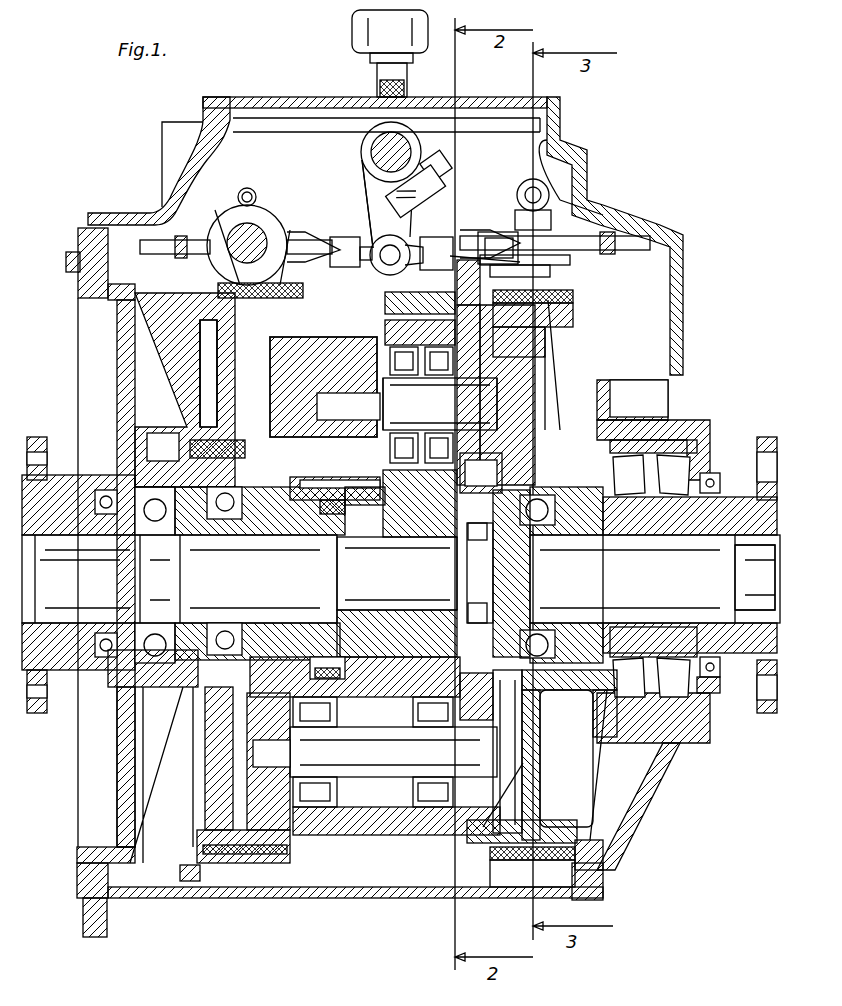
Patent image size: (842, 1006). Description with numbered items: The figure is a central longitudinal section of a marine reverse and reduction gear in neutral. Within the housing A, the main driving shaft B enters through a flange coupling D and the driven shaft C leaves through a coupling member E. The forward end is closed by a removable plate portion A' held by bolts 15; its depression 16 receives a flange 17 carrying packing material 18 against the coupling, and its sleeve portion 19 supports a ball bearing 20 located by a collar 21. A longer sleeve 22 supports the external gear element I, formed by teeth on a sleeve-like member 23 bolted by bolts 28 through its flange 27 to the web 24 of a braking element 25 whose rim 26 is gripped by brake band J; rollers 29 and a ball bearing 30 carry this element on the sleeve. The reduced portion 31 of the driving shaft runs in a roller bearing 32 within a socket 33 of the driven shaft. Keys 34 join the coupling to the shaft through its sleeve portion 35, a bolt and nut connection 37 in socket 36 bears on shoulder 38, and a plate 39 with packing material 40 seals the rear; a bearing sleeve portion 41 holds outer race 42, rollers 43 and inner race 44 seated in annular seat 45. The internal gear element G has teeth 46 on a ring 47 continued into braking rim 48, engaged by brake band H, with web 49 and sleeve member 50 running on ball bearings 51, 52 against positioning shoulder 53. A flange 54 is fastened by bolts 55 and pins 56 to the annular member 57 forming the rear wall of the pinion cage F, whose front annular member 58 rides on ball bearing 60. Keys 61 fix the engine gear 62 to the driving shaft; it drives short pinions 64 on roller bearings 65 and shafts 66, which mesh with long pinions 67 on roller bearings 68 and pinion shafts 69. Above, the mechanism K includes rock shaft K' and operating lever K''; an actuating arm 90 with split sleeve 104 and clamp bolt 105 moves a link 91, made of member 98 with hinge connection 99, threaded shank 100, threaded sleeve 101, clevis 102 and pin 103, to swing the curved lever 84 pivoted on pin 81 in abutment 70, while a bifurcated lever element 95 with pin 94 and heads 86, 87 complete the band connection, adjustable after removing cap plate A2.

The bolts 15 is at (66, 262).
The depression 16 is at (120, 720).
The flange 17 is at (110, 690).
The packing material 18 is at (95, 655).
The sleeve portion 19 is at (160, 490).
The ball bearing 20 is at (135, 537).
The collar 21 is at (85, 575).
The sleeve 22 is at (300, 535).
The sleeve-like member 23 is at (360, 478).
The web 24 is at (217, 370).
The braking element 25 is at (200, 330).
The rim 26 is at (218, 291).
The flange 27 is at (228, 440).
The bolts 28 is at (163, 447).
The rollers 29 is at (328, 640).
The ball bearing 30 is at (228, 520).
The reduced portion 31 is at (480, 580).
The roller bearing 32 is at (530, 605).
The socket 33 is at (470, 540).
The keys 34 is at (642, 535).
The sleeve portion 35 is at (720, 488).
The socket 36 is at (720, 677).
The bolt and nut connection 37 is at (755, 577).
The shoulder 38 is at (712, 623).
The plate 39 is at (680, 743).
The packing material 40 is at (712, 693).
The bearing sleeve portion 41 is at (632, 400).
The outer race 42 is at (672, 440).
The rollers 43 is at (700, 455).
The inner race 44 is at (700, 535).
The annular seat 45 is at (640, 545).
The teeth 46 is at (388, 300).
The ring 47 is at (430, 320).
The braking rim 48 is at (573, 315).
The web 49 is at (560, 340).
The sleeve member 50 is at (560, 535).
The ball bearing 51 is at (555, 645).
The ball bearing 52 is at (590, 640).
The positioning shoulder 53 is at (525, 580).
The flange 54 is at (500, 460).
The bolts 55 is at (493, 700).
The pins 56 is at (535, 450).
The annular member 57 is at (545, 350).
The annular member 58 is at (272, 863).
The ball bearing 60 is at (280, 470).
The keys 61 is at (397, 573).
The gear 62 is at (401, 561).
The short pinions 64 is at (395, 378).
The roller bearings 65 is at (432, 378).
The shafts 66 is at (481, 404).
The long pinions 67 is at (368, 830).
The roller bearings 68 is at (418, 797).
The pinion shafts 69 is at (393, 752).
The abutment 70 is at (262, 215).
The pin 81 is at (235, 255).
The curved lever 84 is at (155, 255).
The head 86 is at (242, 195).
The head 87 is at (532, 180).
The actuating arm 90 is at (370, 205).
The link 91 is at (490, 268).
The pin 94 is at (640, 228).
The bifurcated lever element 95 is at (178, 236).
The member 98 is at (397, 238).
The hinge connection 99 is at (386, 245).
The threaded shank 100 is at (500, 232).
The threaded sleeve 101 is at (443, 240).
The clevis 102 is at (500, 232).
The pin 103 is at (575, 268).
The split sleeve 104 is at (444, 160).
The clamp bolt 105 is at (445, 178).
The housing A is at (380, 236).
The removable plate portion A' is at (136, 565).
The cap plate A2 is at (258, 97).
The main driving shaft B is at (214, 586).
The driven shaft C is at (674, 582).
The flange coupling D is at (40, 440).
The coupling member E is at (766, 438).
The pinion cage F is at (362, 337).
The internal gear element G is at (415, 887).
The brake band H is at (575, 296).
The external gear element I is at (340, 483).
The brake band J is at (285, 298).
The operating mechanism K is at (372, 212).
The rock shaft K' is at (371, 152).
The operating lever K'' is at (373, 53).